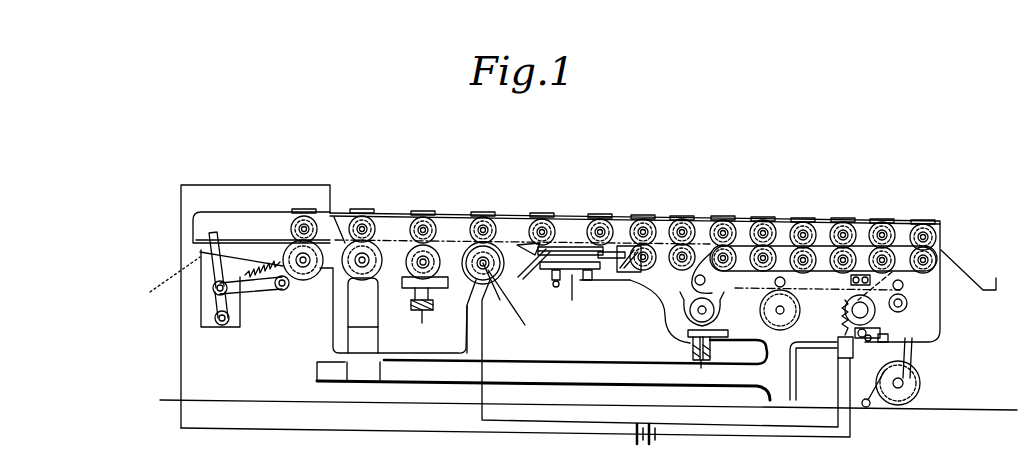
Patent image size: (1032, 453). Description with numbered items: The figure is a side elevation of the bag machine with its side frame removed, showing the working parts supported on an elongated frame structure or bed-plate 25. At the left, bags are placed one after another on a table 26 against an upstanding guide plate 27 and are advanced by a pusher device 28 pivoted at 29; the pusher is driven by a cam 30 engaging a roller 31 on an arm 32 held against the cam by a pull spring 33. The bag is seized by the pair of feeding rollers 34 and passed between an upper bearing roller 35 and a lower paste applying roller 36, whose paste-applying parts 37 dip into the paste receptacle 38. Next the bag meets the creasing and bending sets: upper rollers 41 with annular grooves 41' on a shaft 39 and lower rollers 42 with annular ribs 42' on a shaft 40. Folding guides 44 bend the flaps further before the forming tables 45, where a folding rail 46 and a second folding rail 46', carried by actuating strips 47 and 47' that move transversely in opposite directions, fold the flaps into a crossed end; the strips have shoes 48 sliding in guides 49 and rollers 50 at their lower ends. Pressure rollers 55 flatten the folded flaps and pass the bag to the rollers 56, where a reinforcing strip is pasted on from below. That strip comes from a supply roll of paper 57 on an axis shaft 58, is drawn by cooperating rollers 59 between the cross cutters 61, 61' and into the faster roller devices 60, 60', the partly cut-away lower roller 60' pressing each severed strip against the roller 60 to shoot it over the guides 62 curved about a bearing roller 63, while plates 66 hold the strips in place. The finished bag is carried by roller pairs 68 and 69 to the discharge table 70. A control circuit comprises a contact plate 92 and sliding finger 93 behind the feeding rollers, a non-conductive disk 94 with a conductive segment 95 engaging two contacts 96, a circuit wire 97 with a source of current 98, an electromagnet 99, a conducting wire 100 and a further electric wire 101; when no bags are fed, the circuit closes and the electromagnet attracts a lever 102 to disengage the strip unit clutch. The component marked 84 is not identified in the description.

The frame structure or bed-plate 25 is at (520, 216).
The table 26 is at (243, 240).
The guide plate 27 is at (252, 214).
The pusher device 28 is at (160, 282).
The pivot 29 is at (232, 320).
The cam 30 is at (300, 282).
The roller 31 is at (283, 291).
The arm 32 is at (248, 290).
The pull spring 33 is at (258, 270).
The feeding rollers 34 is at (337, 212).
The upper bearing roller 35 is at (437, 224).
The lower paste applying roller 36 is at (472, 254).
The paste-applying parts 37 is at (411, 280).
The receptacle 38 is at (436, 300).
The shaft 39 is at (498, 220).
The shaft 40 is at (492, 272).
The rollers 41 is at (500, 229).
The annular groove 41' is at (514, 233).
The rollers 42 is at (518, 305).
The annular ribs 42' is at (502, 297).
The folding guides 44 is at (528, 261).
The forming tables 45 is at (560, 246).
The folding rail 46 is at (650, 215).
The folding rail 46' is at (613, 220).
The actuating strip 47 is at (567, 290).
The actuating strip 47' is at (606, 290).
The shoes 48 is at (555, 288).
The guides 49 is at (605, 268).
The rollers 50 is at (572, 300).
The pressure rollers 55 is at (660, 225).
The rollers 56 is at (730, 215).
The supply roll of paper 57 is at (920, 385).
The axis shaft 58 is at (905, 382).
The cooperating rollers 59 is at (905, 302).
The roller device 60 is at (796, 279).
The lower roller device 60' is at (800, 310).
The cross cutter 61 is at (848, 279).
The cross cutter 61' is at (874, 305).
The guides 62 is at (718, 315).
The bearing roller 63 is at (706, 280).
The solenoid 84 is at (712, 335).
The plates 66 is at (690, 345).
The roller pair 68 is at (895, 215).
The roller pair 69 is at (945, 215).
The discharge table 70 is at (968, 279).
The contact plate 92 is at (410, 230).
The sliding finger 93 is at (375, 212).
The non-conductive disk 94 is at (470, 264).
The current conductive segment 95 is at (467, 306).
The contacts 96 is at (650, 353).
The circuit wire 97 is at (603, 433).
The source of current 98 is at (656, 436).
The electromagnet 99 is at (840, 350).
The conducting wire 100 is at (330, 340).
The electric wire 101 is at (748, 437).
The lever 102 is at (882, 342).